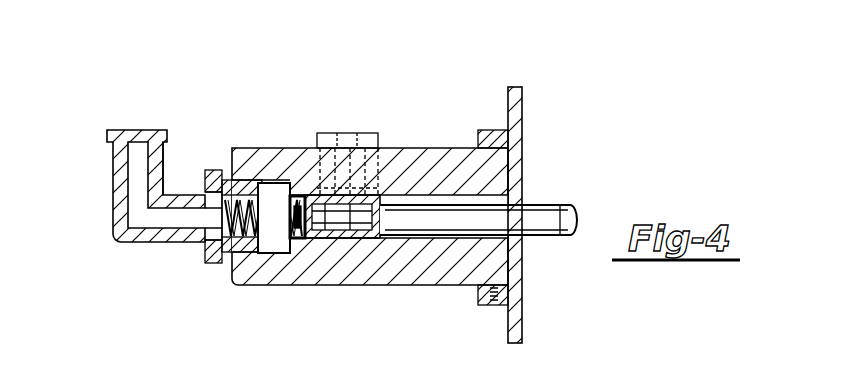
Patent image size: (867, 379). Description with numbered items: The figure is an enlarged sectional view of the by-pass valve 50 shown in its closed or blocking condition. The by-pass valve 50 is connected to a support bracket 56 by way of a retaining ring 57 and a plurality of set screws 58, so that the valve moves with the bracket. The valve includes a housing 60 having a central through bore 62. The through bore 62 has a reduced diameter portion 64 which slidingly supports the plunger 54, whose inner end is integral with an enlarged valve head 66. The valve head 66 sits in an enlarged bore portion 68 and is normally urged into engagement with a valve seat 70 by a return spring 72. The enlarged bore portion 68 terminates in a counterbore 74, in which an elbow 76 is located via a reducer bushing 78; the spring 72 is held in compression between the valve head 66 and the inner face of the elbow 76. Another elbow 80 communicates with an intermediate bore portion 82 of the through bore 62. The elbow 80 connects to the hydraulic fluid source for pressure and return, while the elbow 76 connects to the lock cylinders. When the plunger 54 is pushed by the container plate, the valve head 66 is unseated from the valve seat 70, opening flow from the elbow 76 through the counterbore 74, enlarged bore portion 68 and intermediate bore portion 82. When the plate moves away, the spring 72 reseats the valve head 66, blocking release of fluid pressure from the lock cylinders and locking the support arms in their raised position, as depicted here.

The by-pass valve 50 is at (452, 98).
The plunger 54 is at (563, 205).
The support bracket 56 is at (523, 105).
The retaining ring 57 is at (485, 131).
The set screws 58 is at (495, 306).
The housing 60 is at (275, 178).
The through bore 62 is at (487, 217).
The reduced diameter portion 64 is at (437, 207).
The valve head 66 is at (307, 195).
The enlarged bore portion 68 is at (283, 240).
The valve seat 70 is at (308, 240).
The return spring 72 is at (215, 265).
The counterbore 74 is at (262, 180).
The elbow 76 is at (100, 200).
The reducer bushing 78 is at (165, 170).
The elbow 80 is at (318, 133).
The intermediate bore portion 82 is at (380, 200).